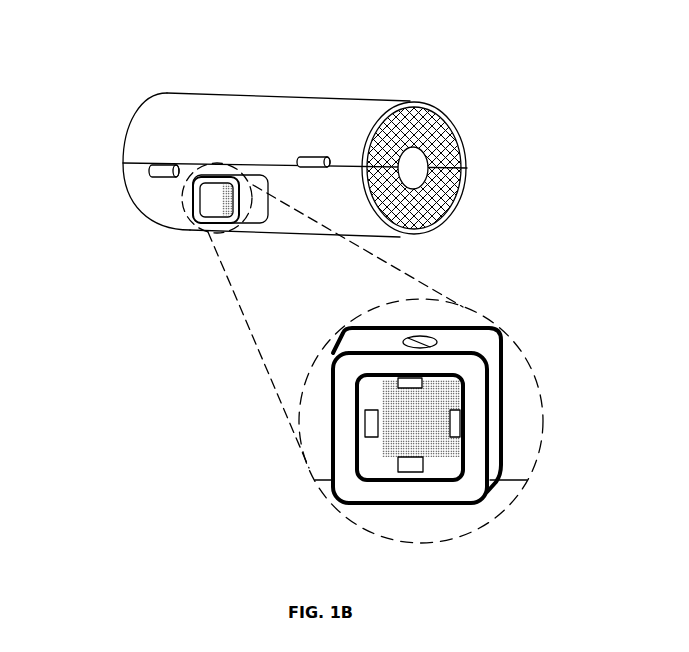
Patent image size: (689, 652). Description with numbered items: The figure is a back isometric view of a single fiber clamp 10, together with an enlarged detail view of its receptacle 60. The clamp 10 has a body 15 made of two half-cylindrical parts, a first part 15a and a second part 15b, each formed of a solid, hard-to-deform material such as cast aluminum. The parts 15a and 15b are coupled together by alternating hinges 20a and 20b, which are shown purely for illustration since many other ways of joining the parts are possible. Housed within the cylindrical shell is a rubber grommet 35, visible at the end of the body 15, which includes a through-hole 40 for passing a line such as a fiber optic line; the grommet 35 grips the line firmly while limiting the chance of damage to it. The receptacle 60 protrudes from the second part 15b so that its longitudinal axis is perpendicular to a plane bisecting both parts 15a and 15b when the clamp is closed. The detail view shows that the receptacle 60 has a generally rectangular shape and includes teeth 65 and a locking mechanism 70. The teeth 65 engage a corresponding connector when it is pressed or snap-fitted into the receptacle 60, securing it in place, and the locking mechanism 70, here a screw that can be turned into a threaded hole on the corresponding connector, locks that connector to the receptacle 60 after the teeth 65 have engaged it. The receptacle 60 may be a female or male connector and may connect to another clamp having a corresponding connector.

The single fiber clamp 10 is at (297, 236).
The body 15 is at (308, 155).
The first part 15a is at (363, 98).
The second part 15b is at (393, 237).
The alternating hinge 20a is at (160, 178).
The alternating hinge 20b is at (313, 153).
The rubber grommet 35 is at (433, 198).
The through-hole 40 is at (416, 161).
The receptacle 60 is at (202, 237).
The teeth 65 is at (418, 479).
The locking mechanism 70 is at (436, 337).